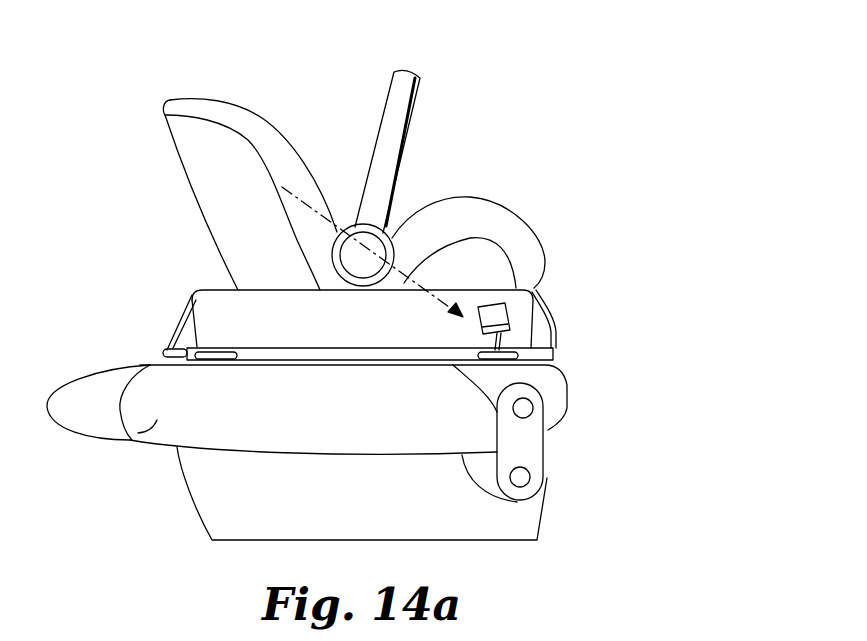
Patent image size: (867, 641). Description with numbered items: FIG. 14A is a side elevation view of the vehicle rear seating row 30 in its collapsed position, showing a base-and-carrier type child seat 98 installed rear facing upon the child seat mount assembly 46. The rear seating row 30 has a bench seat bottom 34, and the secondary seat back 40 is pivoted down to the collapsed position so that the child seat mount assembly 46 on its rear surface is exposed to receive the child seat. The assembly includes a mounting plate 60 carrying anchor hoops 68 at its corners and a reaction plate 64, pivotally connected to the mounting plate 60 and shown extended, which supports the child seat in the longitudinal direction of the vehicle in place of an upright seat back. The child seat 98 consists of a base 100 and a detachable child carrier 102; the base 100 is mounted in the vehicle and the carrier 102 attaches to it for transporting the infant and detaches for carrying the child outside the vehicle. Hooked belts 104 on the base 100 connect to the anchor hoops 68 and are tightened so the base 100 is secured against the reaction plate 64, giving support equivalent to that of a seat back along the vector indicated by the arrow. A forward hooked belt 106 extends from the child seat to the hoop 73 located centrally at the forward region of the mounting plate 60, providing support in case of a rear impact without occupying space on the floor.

The rear seating row 30 is at (498, 63).
The bench seat bottom 34 is at (225, 492).
The secondary seat back 40 is at (130, 440).
The child seat mount assembly 46 is at (556, 355).
The mounting plate 60 is at (353, 358).
The reaction plate 64 is at (562, 330).
The hoops 68 is at (218, 350).
The hoop 73 is at (165, 352).
The child seat 98 is at (163, 103).
The base 100 is at (192, 307).
The detachable child carrier 102 is at (187, 177).
The hooked belts 104 is at (507, 317).
The forward hooked belt 106 is at (187, 327).